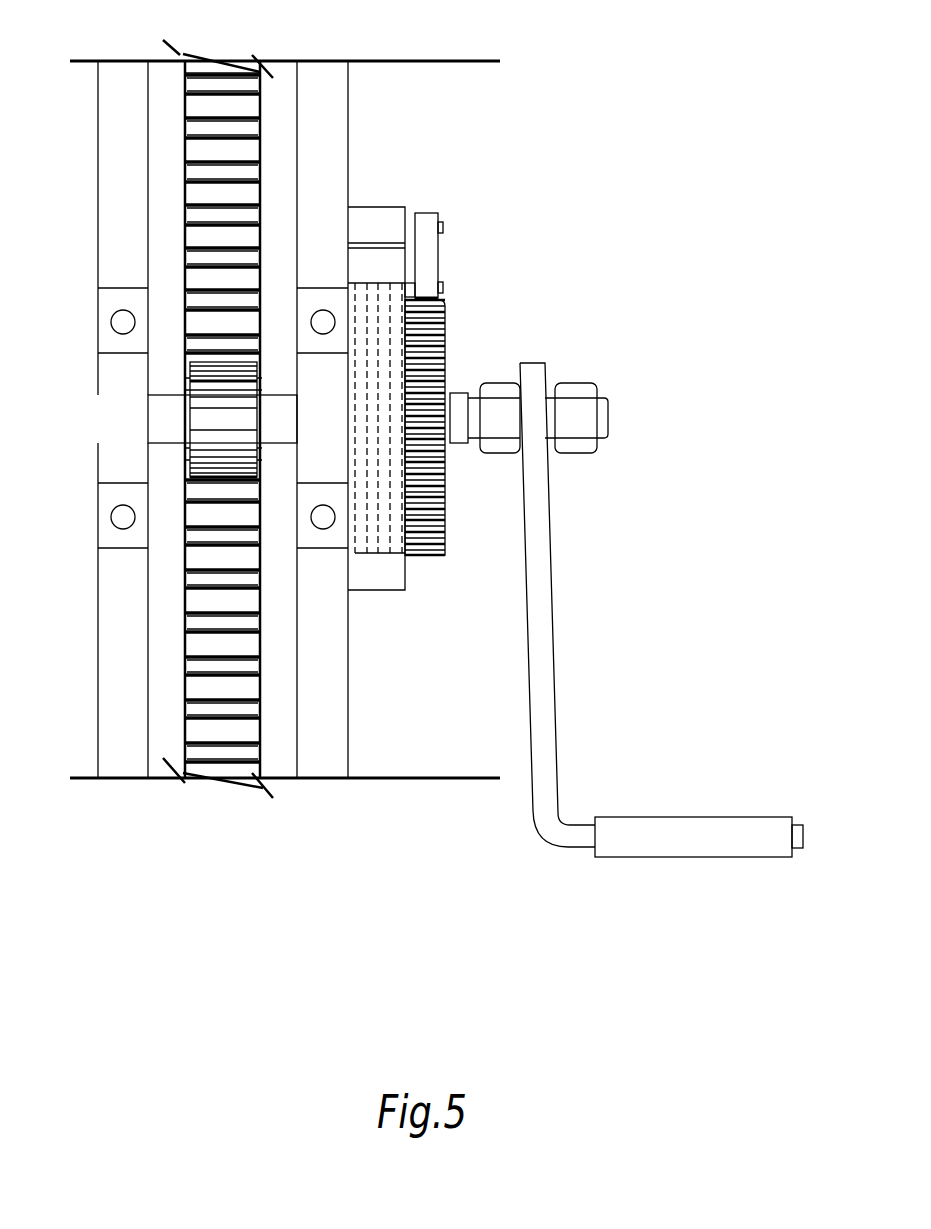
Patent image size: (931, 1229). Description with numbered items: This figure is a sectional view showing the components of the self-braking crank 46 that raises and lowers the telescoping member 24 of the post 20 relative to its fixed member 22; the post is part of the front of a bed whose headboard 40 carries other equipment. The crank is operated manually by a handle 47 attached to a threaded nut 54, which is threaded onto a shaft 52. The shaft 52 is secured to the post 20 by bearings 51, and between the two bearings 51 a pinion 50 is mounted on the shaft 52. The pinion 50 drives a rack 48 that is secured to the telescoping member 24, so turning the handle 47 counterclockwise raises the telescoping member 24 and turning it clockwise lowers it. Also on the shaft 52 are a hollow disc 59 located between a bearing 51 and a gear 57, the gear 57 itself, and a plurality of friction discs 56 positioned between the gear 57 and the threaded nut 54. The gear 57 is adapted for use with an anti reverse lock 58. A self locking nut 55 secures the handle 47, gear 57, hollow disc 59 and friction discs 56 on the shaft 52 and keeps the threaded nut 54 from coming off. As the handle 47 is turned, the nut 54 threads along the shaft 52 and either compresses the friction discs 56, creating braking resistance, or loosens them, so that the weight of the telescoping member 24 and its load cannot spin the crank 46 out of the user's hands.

The post 20 is at (110, 655).
The fixed member 22 is at (112, 132).
The telescoping member 24 is at (280, 100).
The headboard 40 is at (457, 714).
The self-braking crank 46 is at (518, 165).
The handle 47 is at (545, 650).
The rack 48 is at (193, 190).
The pinion 50 is at (205, 385).
The bearings 51 is at (112, 427).
The shaft 52 is at (612, 412).
The threaded nut 54 is at (500, 390).
The self locking nut 55 is at (585, 392).
The friction discs 56 is at (383, 545).
The gear 57 is at (440, 545).
The anti reverse lock 58 is at (425, 270).
The hollow disc 59 is at (375, 590).